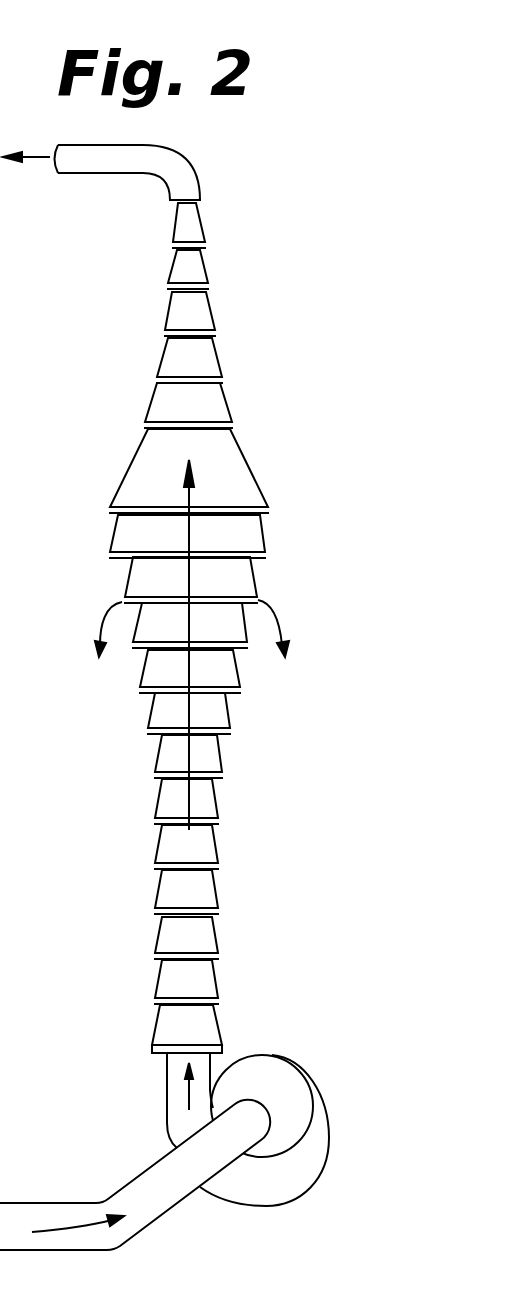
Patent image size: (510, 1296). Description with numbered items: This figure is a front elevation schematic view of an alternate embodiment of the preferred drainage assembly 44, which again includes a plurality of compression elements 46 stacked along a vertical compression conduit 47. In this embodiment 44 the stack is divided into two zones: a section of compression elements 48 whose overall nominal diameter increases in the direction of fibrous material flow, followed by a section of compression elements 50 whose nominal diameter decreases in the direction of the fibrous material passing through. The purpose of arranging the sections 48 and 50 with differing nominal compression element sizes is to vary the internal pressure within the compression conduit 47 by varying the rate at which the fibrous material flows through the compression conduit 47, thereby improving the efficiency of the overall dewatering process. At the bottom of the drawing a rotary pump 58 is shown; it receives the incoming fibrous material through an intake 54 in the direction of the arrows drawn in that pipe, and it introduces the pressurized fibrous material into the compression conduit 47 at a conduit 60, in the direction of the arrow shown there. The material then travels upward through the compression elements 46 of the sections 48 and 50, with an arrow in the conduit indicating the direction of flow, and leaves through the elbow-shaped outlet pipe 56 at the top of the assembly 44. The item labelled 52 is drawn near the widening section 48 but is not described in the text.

The drainage assembly 44 is at (100, 468).
The compression elements 46 is at (157, 800).
The compression conduit 47 is at (200, 397).
The section of compression elements 48 is at (87, 508).
The section of compression elements 50 is at (276, 493).
The intermediate cone element 52 is at (217, 598).
The intake 54 is at (135, 1194).
The outlet pipe 56 is at (123, 145).
The rotary pump 58 is at (253, 1052).
The conduit 60 is at (165, 1092).